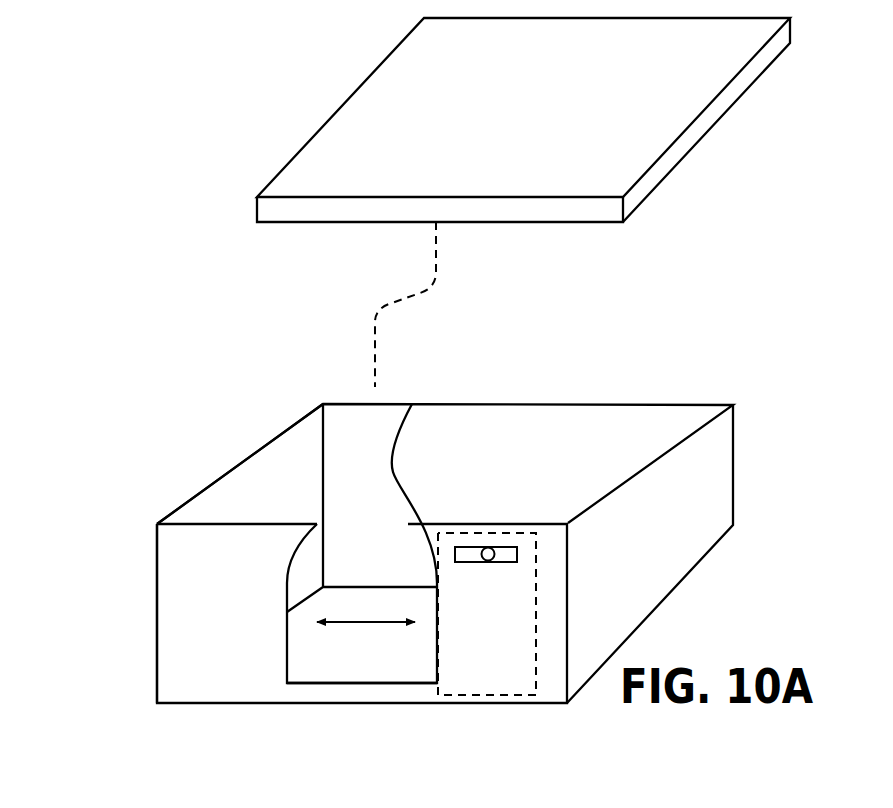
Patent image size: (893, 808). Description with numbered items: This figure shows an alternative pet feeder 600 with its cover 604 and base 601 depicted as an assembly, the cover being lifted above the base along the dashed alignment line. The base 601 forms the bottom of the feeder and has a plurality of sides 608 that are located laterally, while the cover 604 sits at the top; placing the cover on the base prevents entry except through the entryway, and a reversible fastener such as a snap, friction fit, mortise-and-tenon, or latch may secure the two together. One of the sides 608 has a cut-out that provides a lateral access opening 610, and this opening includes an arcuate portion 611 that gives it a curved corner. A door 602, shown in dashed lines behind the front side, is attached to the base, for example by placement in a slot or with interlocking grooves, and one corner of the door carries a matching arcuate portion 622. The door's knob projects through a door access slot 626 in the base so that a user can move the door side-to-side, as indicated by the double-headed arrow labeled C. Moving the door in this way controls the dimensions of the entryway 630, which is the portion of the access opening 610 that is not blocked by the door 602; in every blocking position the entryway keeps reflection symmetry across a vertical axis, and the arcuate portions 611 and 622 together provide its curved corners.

The feeder 600 is at (98, 218).
The base 601 is at (712, 507).
The door 602 is at (483, 675).
The cover 604 is at (732, 90).
The sides 608 is at (205, 485).
The lateral access opening 610 is at (316, 683).
The arcuate portion 611 is at (302, 535).
The arcuate portion 622 is at (412, 404).
The door access slot 626 is at (477, 547).
The entryway 630 is at (307, 613).